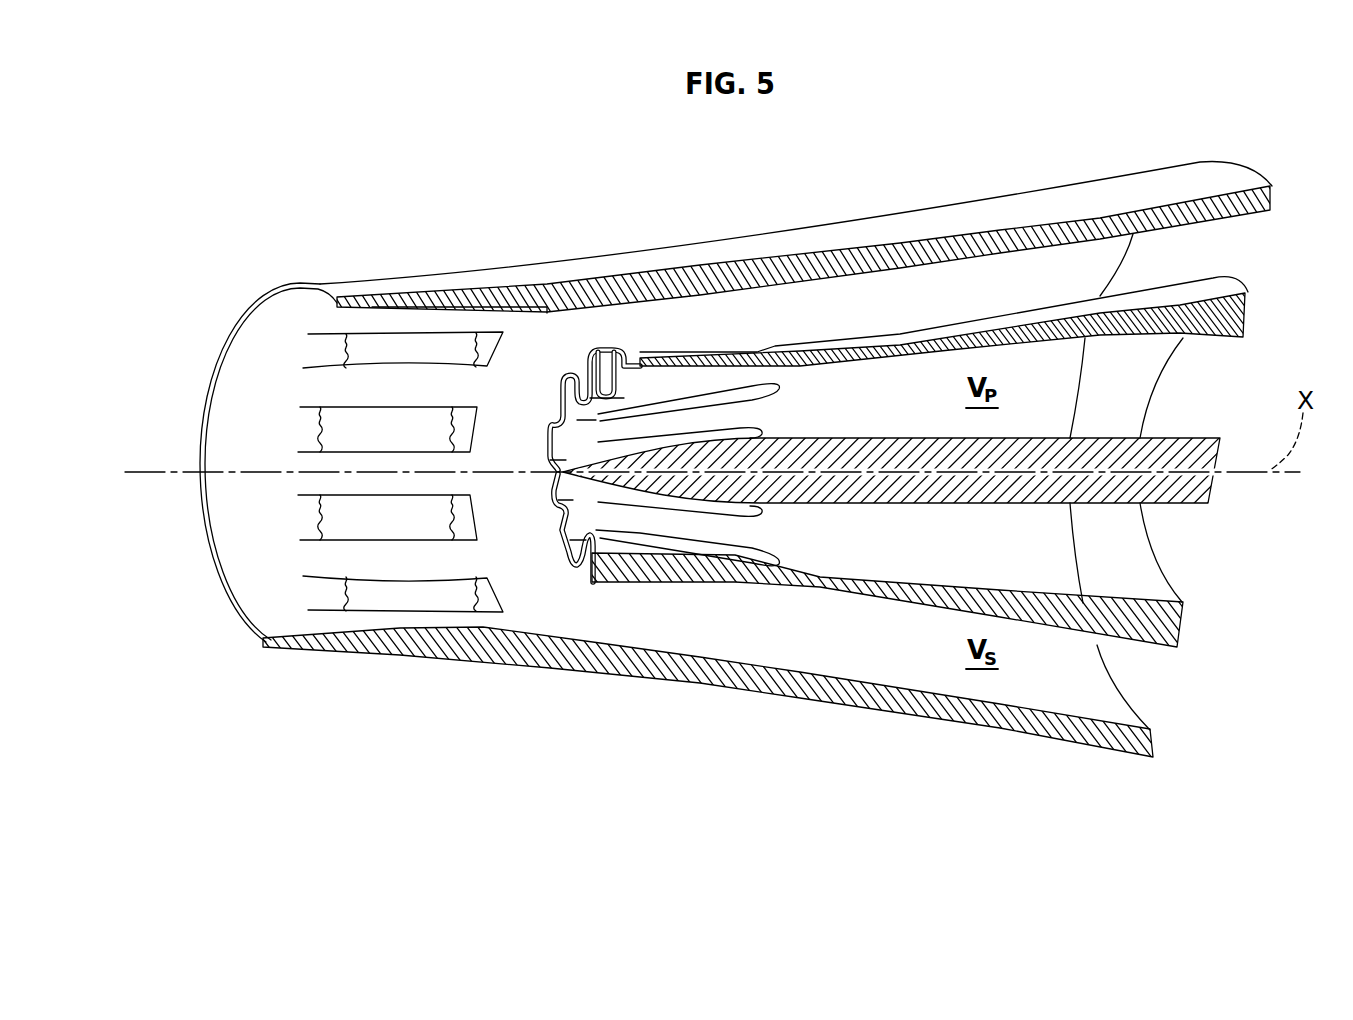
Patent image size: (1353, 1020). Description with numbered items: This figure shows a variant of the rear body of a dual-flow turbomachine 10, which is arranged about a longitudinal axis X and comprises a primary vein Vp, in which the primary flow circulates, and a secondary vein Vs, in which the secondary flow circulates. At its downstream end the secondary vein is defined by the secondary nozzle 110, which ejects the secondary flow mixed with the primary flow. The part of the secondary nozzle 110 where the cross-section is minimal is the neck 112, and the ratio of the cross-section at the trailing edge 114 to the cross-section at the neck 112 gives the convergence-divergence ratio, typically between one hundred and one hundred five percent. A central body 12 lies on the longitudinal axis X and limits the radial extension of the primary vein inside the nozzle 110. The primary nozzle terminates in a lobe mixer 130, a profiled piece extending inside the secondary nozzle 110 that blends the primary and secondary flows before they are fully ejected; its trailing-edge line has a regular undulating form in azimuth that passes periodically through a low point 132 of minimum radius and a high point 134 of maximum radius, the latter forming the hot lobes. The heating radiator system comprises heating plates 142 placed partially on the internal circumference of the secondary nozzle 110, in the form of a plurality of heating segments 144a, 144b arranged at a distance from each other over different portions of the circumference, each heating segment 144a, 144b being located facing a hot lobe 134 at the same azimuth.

The dual-flow turbomachine 10 is at (712, 772).
The central body 12 is at (917, 488).
The secondary nozzle 110 is at (621, 256).
The neck of the secondary nozzle 112 is at (483, 628).
The trailing edge 114 is at (205, 553).
The lobe mixer 130 is at (650, 573).
The low point 132 is at (630, 402).
The high point (hot lobe) 134 is at (596, 352).
The heating plate 142 is at (388, 353).
The heating segment 144a is at (403, 594).
The heating segment 144b is at (367, 423).